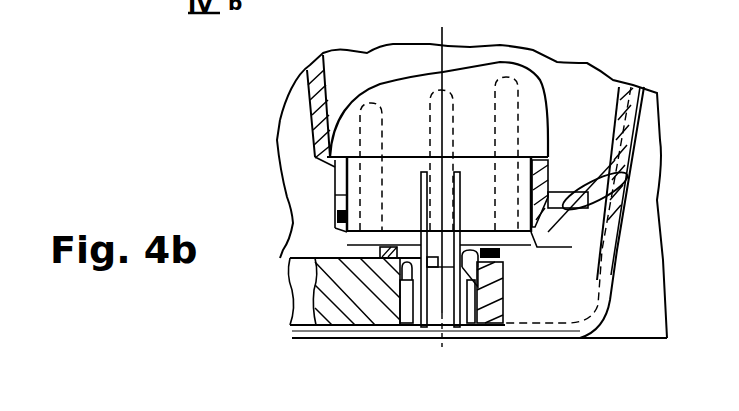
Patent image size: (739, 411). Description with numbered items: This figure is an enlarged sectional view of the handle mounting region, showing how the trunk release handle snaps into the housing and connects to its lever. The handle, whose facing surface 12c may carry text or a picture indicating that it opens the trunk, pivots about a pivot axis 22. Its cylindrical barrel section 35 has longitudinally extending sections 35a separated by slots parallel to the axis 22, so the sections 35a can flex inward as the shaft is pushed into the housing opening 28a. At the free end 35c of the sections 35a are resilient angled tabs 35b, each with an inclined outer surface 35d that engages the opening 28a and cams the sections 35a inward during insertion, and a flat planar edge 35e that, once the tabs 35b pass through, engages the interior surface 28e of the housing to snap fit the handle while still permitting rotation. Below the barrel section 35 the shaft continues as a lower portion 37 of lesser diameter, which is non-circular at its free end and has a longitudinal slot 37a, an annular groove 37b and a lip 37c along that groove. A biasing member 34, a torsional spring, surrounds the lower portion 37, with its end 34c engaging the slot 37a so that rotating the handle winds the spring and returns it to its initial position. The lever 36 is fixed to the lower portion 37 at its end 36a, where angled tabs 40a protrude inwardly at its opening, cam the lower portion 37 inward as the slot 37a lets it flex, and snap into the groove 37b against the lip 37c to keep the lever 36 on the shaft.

The facing surface 12c is at (403, 173).
The longitudinally extending sections 35a is at (393, 173).
The pivot axis 22 is at (443, 35).
The barrel section 35 is at (478, 187).
The opening 28a is at (357, 176).
The planar edge 35e is at (343, 208).
The interior surface 28e is at (345, 222).
The inclined outer surface 35d is at (350, 240).
The free end 35c is at (378, 252).
The lever 36 is at (295, 281).
The end of lever 36a is at (298, 295).
The end of biasing member 34c is at (400, 263).
The angled tabs 40a is at (400, 280).
The lower portion 37 is at (408, 310).
The lip 37c is at (420, 312).
The slot 37a is at (447, 300).
The annular groove 37b is at (487, 300).
The biasing member 34 is at (503, 255).
The tabs 35b is at (537, 242).